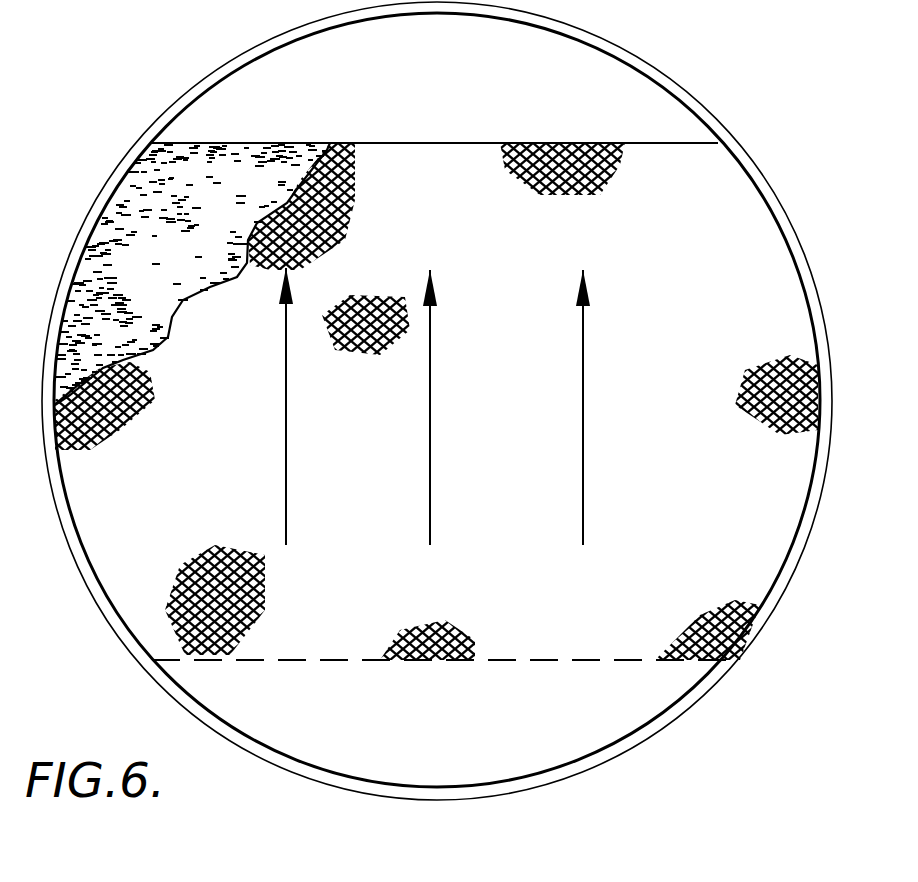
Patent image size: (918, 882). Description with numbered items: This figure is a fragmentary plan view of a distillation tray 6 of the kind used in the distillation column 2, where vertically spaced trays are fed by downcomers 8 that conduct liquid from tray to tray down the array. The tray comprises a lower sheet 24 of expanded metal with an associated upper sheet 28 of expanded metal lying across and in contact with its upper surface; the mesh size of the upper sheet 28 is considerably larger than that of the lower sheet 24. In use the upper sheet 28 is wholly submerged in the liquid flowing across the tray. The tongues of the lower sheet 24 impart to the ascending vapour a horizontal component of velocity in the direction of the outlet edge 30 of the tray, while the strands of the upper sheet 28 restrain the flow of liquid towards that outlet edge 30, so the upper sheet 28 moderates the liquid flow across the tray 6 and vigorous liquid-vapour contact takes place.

The distillation column 2 is at (238, 50).
The distillation tray 6 is at (135, 534).
The downcomer 8 is at (442, 746).
The lower sheet of expanded metal 24 is at (100, 232).
The upper sheet of expanded metal 28 is at (297, 270).
The outlet edge 30 is at (235, 143).